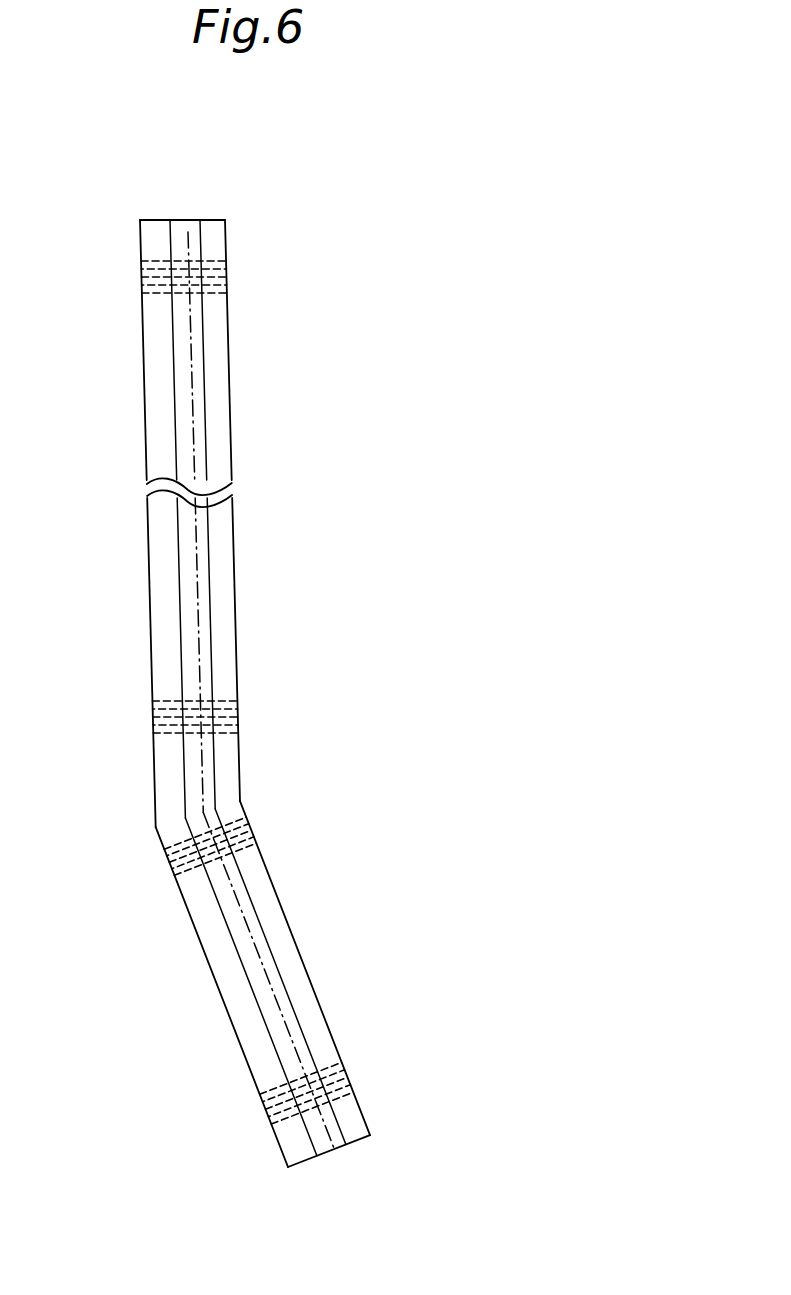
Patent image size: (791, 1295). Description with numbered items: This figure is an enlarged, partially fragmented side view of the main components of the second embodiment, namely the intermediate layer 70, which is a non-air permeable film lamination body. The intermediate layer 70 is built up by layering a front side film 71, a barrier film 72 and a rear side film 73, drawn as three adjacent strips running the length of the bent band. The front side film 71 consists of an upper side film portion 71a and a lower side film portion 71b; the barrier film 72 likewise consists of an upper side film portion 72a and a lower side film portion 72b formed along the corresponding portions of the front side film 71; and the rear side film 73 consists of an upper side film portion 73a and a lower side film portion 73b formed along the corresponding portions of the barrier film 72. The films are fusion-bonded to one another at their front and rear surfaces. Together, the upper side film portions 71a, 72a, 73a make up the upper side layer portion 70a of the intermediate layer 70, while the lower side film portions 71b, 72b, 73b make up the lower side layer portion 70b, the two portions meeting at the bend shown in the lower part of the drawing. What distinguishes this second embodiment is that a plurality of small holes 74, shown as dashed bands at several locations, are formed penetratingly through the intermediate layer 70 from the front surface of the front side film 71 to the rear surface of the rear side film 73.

The intermediate layer 70 is at (312, 228).
The upper side layer portion 70a is at (241, 364).
The lower side layer portion 70b is at (352, 985).
The front side film 71 is at (155, 643).
The upper side film portion 71a is at (157, 437).
The lower side film portion 71b is at (233, 990).
The barrier film 72 is at (197, 647).
The upper side film portion 72a is at (182, 367).
The lower side film portion 72b is at (292, 1062).
The rear side film 73 is at (235, 523).
The upper side film portion 73a is at (215, 318).
The lower side film portion 73b is at (335, 1040).
The small holes 74 is at (157, 262).